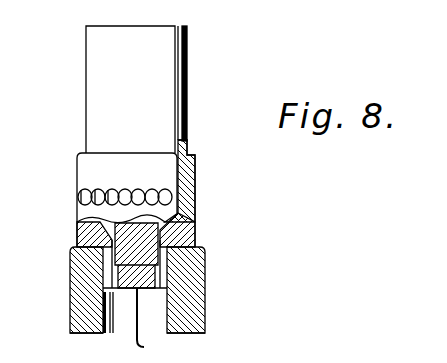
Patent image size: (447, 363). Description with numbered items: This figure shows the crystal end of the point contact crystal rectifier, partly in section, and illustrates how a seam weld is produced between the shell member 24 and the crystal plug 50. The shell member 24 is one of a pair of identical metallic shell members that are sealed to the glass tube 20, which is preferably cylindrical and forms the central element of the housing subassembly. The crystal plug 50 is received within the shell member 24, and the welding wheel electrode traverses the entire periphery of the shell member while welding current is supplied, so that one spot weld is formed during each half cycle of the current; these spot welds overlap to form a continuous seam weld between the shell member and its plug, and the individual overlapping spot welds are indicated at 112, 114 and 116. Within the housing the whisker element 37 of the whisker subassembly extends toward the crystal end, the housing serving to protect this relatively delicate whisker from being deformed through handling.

The crystal plug 50 is at (190, 71).
The shell member 24 is at (78, 180).
The bead 112 is at (118, 189).
The bead 114 is at (138, 189).
The bead 116 is at (148, 189).
The glass tube 20 is at (192, 282).
The whisker element 37 is at (137, 309).